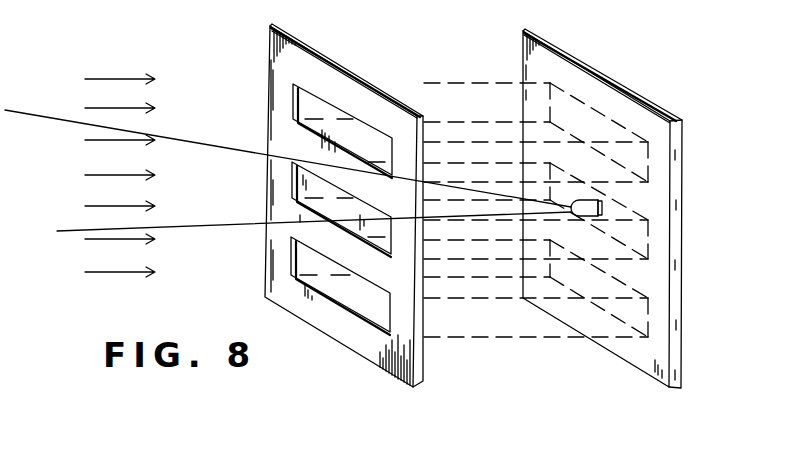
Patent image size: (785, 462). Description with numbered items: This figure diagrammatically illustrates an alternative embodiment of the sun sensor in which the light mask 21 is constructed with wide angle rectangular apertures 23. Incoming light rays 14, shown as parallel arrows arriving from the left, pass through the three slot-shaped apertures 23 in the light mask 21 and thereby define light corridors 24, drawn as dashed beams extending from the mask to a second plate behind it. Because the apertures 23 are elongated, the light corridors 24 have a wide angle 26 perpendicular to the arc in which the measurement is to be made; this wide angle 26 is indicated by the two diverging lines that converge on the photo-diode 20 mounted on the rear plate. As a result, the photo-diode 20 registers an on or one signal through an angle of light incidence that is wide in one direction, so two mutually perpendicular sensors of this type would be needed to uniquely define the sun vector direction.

The light rays 14 is at (117, 78).
The photo-diode 20 is at (606, 208).
The light mask 21 is at (361, 350).
The wide angle apertures 23 is at (322, 101).
The light corridors 24 is at (432, 83).
The wide angle 26 is at (88, 223).